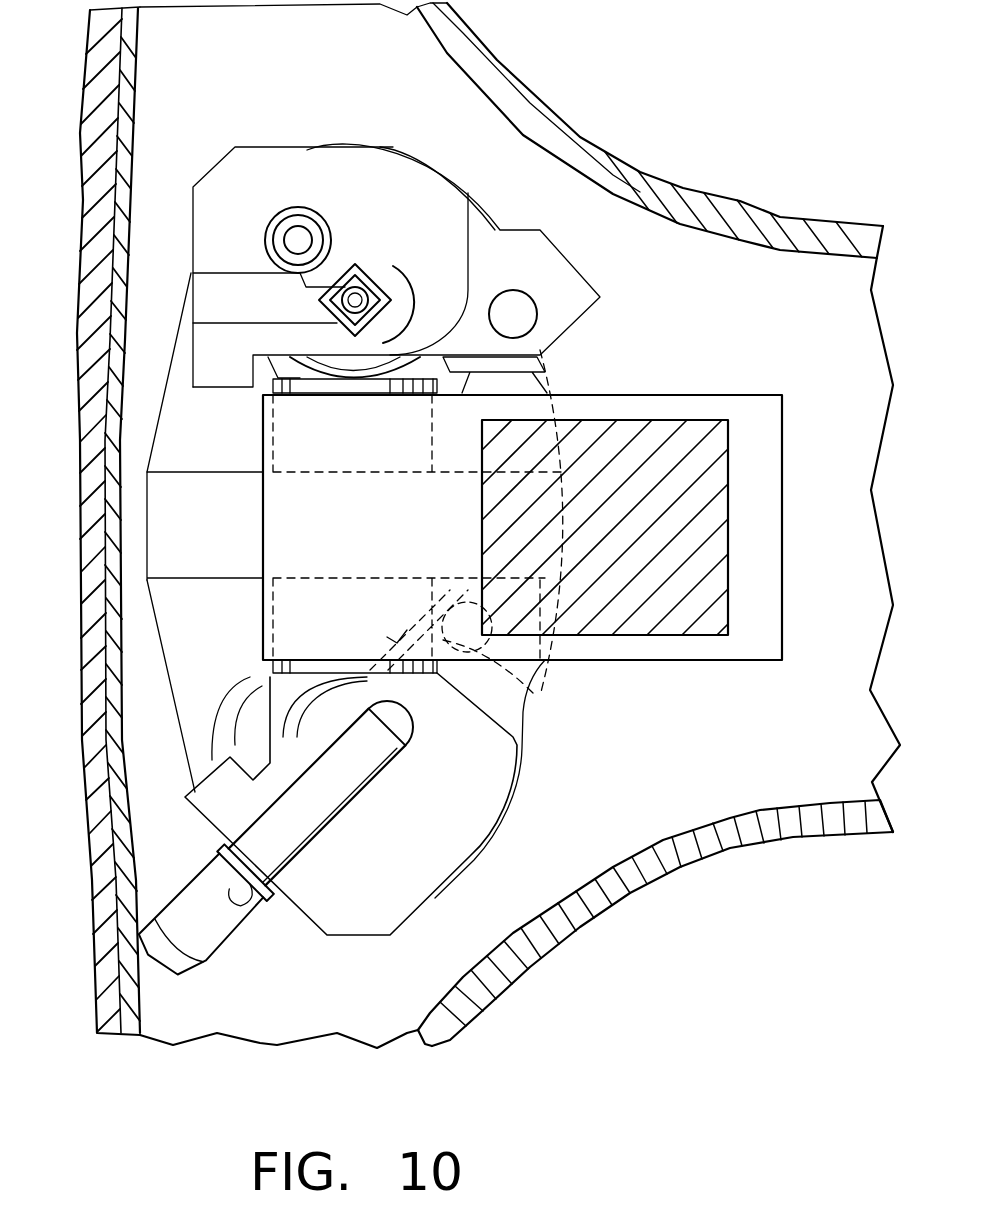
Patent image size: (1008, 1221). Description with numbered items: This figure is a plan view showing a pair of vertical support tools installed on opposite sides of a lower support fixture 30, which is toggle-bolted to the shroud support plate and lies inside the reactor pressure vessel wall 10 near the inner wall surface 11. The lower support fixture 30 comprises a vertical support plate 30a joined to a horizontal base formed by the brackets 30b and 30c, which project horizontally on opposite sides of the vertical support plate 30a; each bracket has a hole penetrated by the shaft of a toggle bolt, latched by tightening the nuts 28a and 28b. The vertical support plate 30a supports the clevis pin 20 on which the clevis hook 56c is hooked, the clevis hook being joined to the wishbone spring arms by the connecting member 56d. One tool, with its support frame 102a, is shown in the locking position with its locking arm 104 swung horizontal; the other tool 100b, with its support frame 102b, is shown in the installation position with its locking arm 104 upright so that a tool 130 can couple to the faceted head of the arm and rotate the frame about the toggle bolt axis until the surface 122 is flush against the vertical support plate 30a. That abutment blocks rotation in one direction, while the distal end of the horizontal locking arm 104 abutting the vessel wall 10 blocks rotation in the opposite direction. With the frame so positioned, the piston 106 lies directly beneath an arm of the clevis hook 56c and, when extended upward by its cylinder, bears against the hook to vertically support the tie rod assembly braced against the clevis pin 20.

The vessel 10 is at (100, 40).
The wall inner surface 11 is at (140, 78).
The clevis pin 20 is at (313, 660).
The nut 28a is at (290, 353).
The nut 28b is at (280, 700).
The lower support fixture 30 is at (135, 532).
The vertical support plate 30a is at (218, 557).
The bracket 30b is at (530, 737).
The bracket 30c is at (161, 372).
The clevis hook 56c is at (610, 403).
The member 56d is at (713, 480).
The vertical support tool 100b is at (408, 524).
The support frame 102a is at (400, 895).
The support frame 102b is at (387, 162).
The locking arm 104 is at (357, 273).
The piston 106 is at (520, 307).
The surface 122 is at (568, 335).
The tool 130 is at (347, 233).